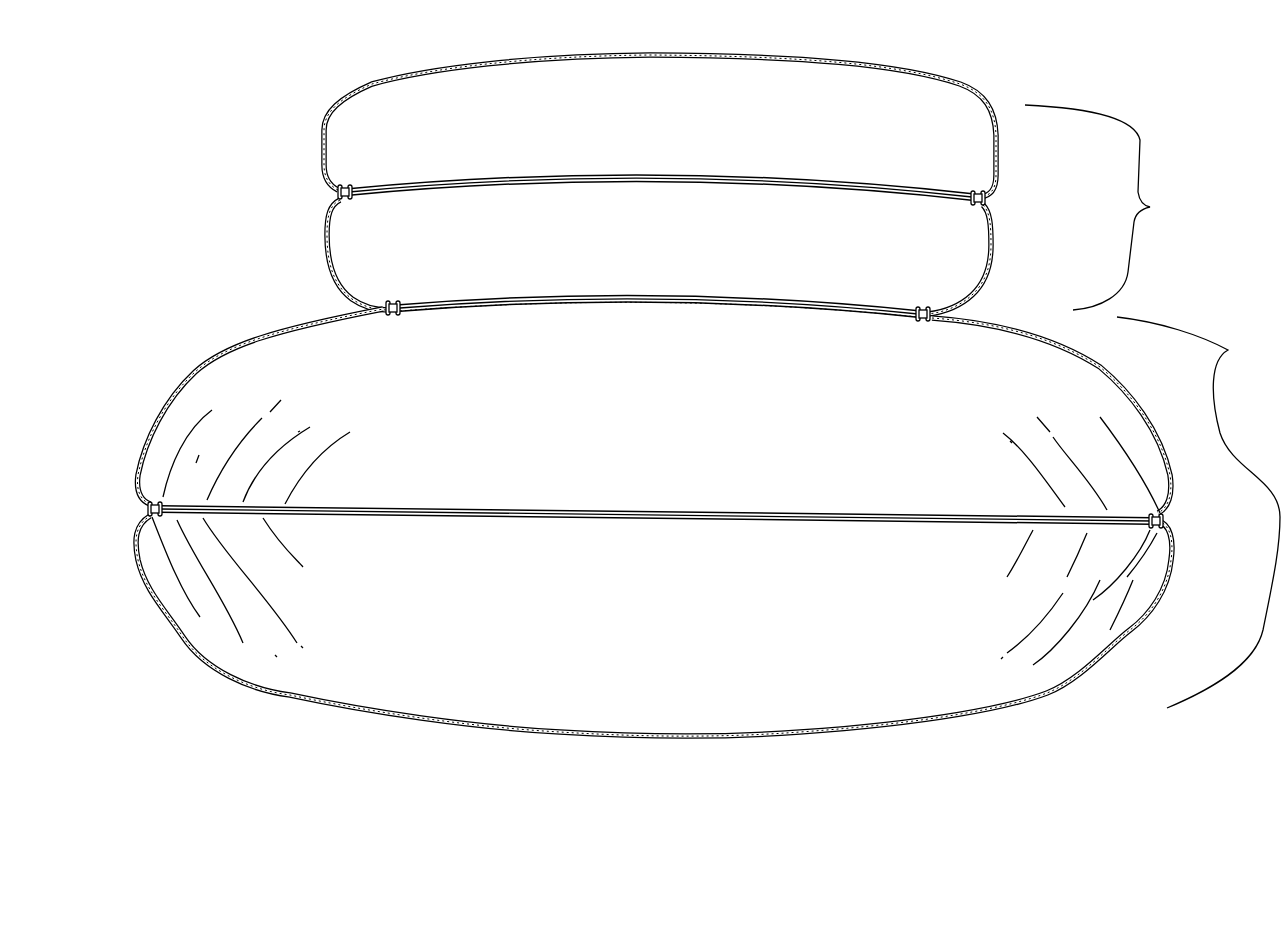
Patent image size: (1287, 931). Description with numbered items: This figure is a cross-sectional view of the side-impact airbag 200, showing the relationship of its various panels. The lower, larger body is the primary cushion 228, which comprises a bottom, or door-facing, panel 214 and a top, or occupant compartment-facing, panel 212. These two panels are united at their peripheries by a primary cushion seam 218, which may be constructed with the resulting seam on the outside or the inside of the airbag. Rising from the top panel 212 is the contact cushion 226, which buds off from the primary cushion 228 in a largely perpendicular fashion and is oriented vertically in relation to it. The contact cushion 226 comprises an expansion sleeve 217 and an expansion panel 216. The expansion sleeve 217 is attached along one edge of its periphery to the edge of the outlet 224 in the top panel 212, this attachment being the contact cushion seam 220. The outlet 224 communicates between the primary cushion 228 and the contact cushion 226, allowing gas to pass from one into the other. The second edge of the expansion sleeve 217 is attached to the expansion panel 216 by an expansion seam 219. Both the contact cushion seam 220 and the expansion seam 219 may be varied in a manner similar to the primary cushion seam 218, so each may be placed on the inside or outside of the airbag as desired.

The airbag 200 is at (185, 200).
The top panel 212 is at (213, 362).
The bottom panel 214 is at (223, 677).
The expansion panel 216 is at (328, 120).
The expansion sleeve 217 is at (328, 247).
The primary cushion seam 218 is at (140, 482).
The expansion seam 219 is at (335, 188).
The contact cushion seam 220 is at (388, 302).
The outlet 224 is at (490, 296).
The contact cushion 226 is at (1105, 207).
The primary cushion 228 is at (1198, 512).